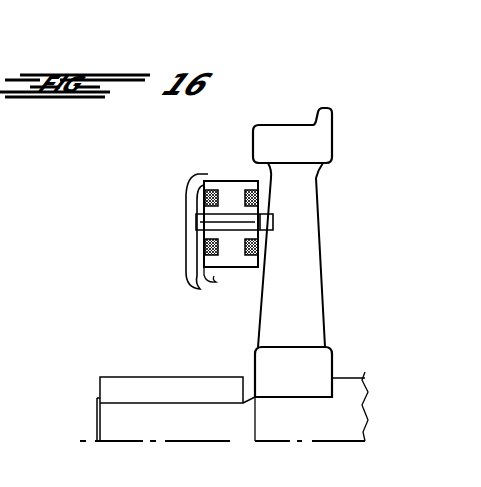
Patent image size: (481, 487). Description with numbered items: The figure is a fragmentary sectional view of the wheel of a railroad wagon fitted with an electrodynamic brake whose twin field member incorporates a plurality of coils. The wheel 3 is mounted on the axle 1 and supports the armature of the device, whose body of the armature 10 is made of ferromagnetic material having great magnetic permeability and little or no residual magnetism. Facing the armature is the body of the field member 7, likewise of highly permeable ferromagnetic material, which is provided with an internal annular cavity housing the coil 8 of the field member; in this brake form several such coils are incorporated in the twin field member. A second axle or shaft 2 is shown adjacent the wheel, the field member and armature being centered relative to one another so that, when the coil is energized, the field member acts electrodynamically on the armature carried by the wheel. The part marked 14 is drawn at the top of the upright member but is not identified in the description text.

The base line 1 is at (203, 434).
The platform 2 is at (150, 385).
The column 3 is at (272, 305).
The coil 7 is at (226, 195).
The bracket 8 is at (205, 199).
The shaft 10 is at (222, 222).
The head 14 is at (282, 138).